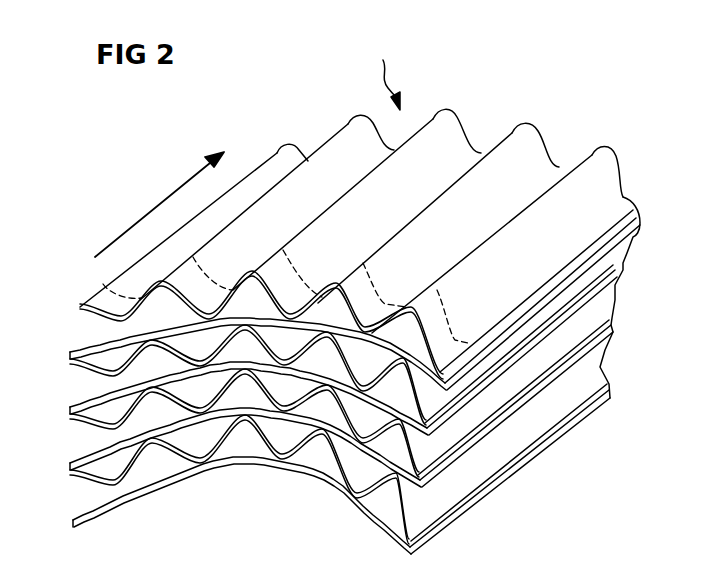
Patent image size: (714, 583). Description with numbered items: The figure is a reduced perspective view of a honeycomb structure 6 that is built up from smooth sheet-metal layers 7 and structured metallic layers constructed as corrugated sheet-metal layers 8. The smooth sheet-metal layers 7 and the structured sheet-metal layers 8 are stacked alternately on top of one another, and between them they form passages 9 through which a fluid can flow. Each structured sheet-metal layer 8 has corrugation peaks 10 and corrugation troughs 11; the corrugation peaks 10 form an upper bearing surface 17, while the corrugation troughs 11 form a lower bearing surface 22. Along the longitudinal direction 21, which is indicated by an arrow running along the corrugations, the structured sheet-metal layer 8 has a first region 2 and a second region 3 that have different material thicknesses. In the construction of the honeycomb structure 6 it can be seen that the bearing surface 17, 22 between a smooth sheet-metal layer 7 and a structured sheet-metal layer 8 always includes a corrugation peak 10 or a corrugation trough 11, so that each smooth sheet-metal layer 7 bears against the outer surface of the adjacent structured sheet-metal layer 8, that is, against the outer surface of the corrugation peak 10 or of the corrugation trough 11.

The first region 2 is at (613, 198).
The second region 3 is at (100, 294).
The honeycomb structure 6 is at (388, 73).
The smooth sheet-metal layer 7 is at (233, 458).
The structured sheet-metal layer 8 is at (80, 308).
The passage 9 is at (318, 460).
The corrugation peak 10 is at (527, 123).
The corrugation trough 11 is at (561, 165).
The upper bearing surface 17 is at (360, 122).
The longitudinal direction 21 is at (150, 210).
The lower bearing surface 22 is at (161, 372).